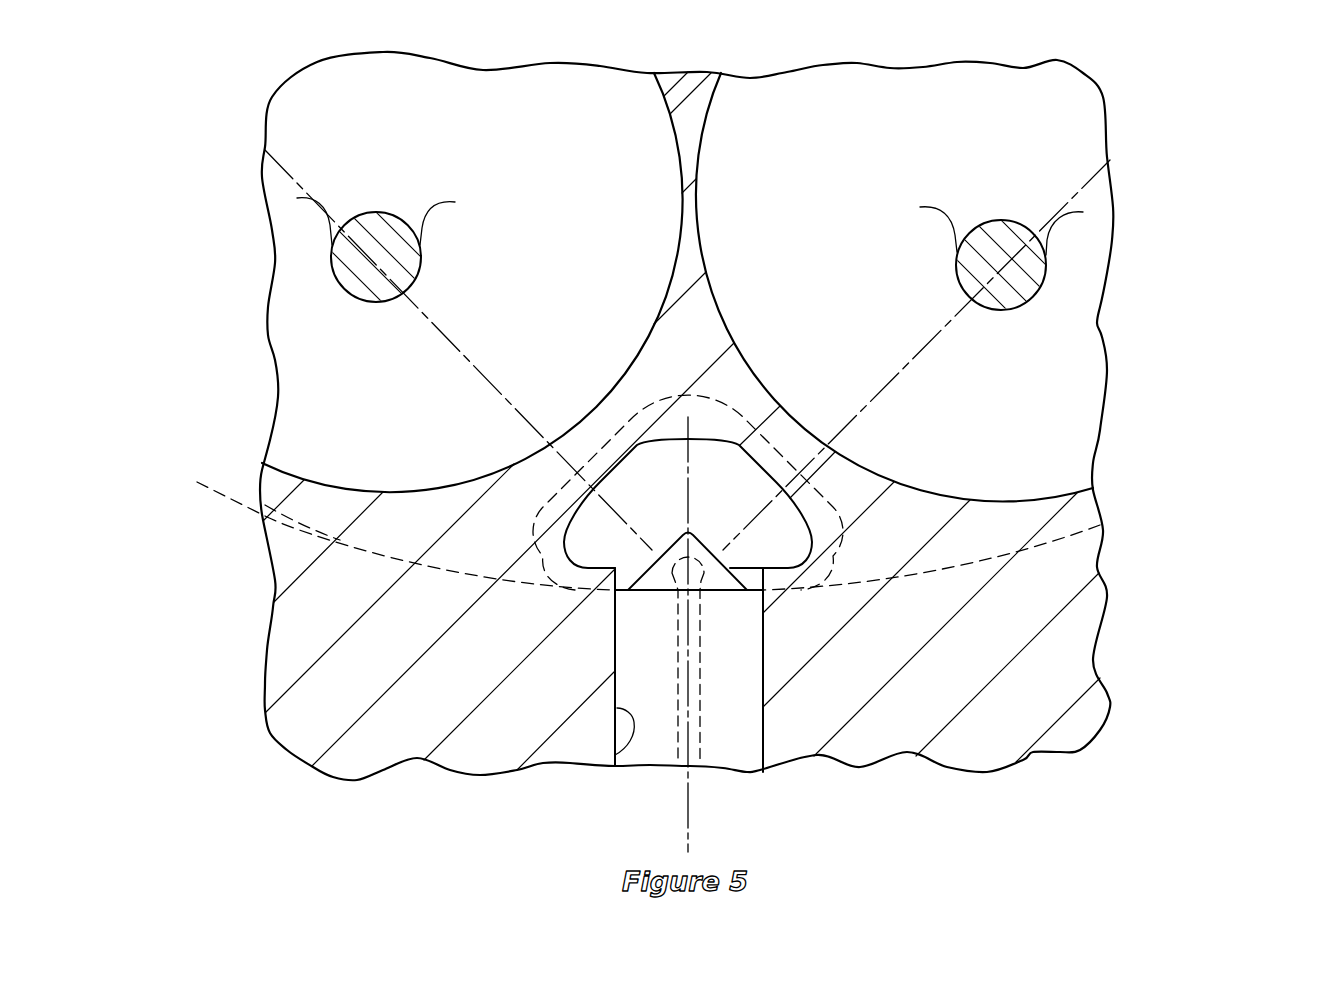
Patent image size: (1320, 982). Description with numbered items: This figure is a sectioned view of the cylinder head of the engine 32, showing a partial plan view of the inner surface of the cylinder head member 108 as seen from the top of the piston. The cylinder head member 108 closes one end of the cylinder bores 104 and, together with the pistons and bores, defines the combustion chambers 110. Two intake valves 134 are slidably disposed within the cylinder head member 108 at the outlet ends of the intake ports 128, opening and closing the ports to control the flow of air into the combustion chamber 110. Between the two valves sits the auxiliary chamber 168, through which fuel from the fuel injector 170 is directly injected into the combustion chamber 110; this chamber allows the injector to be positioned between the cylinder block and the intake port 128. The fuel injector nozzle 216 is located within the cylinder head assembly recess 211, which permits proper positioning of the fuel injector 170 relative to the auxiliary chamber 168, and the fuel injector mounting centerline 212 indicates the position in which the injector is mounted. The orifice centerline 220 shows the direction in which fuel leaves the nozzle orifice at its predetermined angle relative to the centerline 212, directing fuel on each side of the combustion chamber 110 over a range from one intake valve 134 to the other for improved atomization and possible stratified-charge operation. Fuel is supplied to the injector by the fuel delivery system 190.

The engine 32 is at (1188, 100).
The cylinder bores 104 is at (625, 492).
The cylinder head member 108 is at (305, 695).
The combustion chambers 110 is at (452, 518).
The intake ports 128 is at (330, 487).
The intake valves 134 is at (298, 350).
The auxiliary chamber 168 is at (703, 440).
The fuel injector 170 is at (764, 688).
The fuel delivery system 190 is at (848, 665).
The cylinder head assembly recess 211 is at (615, 757).
The fuel injector mounting centerline 212 is at (692, 829).
The fuel injector nozzle 216 is at (673, 545).
The orifice centerline 220 is at (932, 348).